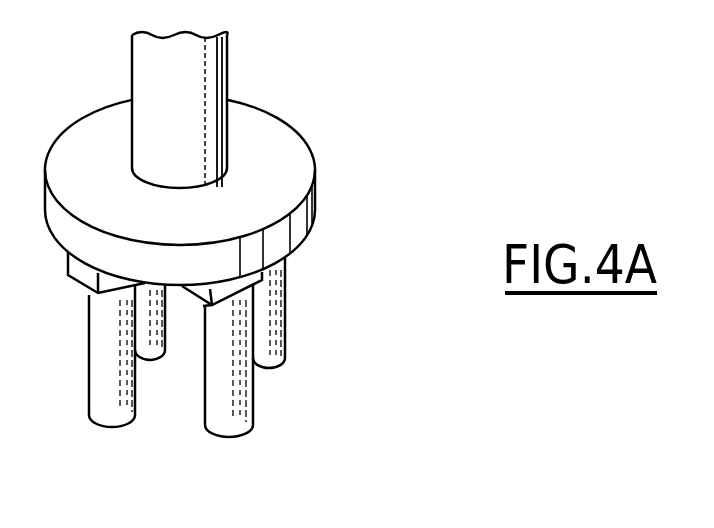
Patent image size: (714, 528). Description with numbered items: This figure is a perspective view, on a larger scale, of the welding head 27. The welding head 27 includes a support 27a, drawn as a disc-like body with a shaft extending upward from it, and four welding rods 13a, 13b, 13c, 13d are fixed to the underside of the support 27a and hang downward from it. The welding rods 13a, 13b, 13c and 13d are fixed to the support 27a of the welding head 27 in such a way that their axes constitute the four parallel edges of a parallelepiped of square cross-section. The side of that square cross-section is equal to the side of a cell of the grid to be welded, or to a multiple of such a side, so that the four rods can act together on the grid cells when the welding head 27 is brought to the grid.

The welding head 27 is at (270, 140).
The support 27a is at (298, 228).
The welding rod 13a is at (106, 427).
The welding rod 13b is at (148, 360).
The welding rod 13c is at (228, 437).
The welding rod 13d is at (275, 368).